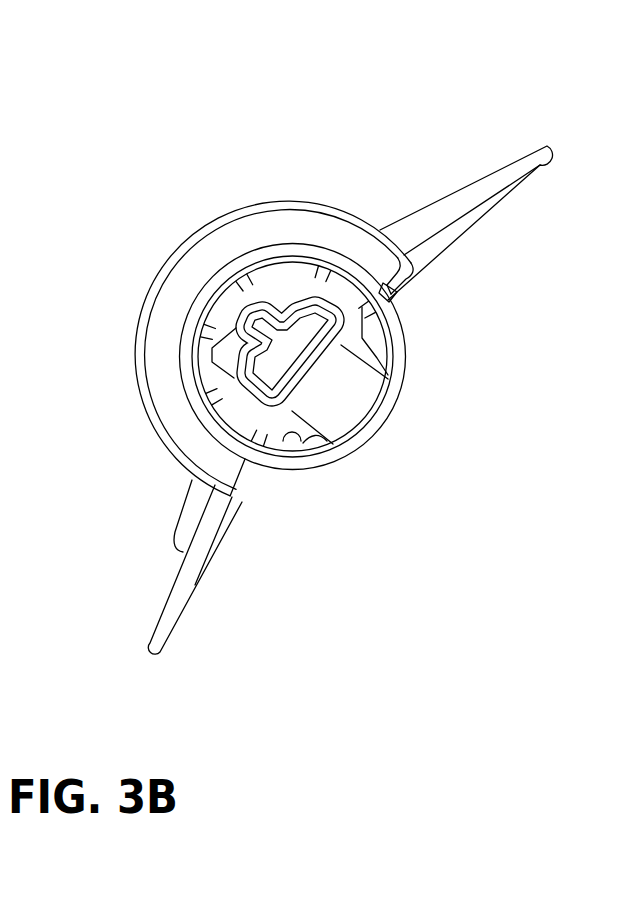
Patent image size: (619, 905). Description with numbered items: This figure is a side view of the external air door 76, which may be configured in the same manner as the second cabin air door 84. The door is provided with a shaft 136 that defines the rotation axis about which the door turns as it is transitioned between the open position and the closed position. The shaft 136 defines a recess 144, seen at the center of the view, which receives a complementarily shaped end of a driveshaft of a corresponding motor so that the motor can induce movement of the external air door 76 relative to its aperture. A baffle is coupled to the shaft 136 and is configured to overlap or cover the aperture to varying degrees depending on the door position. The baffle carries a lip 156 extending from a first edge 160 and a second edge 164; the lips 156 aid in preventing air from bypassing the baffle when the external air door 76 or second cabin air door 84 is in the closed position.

The external air door 76 is at (377, 132).
The second cabin air door 84 is at (568, 118).
The shaft 136 is at (264, 293).
The recess 144 is at (313, 321).
The lip 156 is at (520, 155).
The first edge 160 is at (453, 200).
The second edge 164 is at (181, 551).